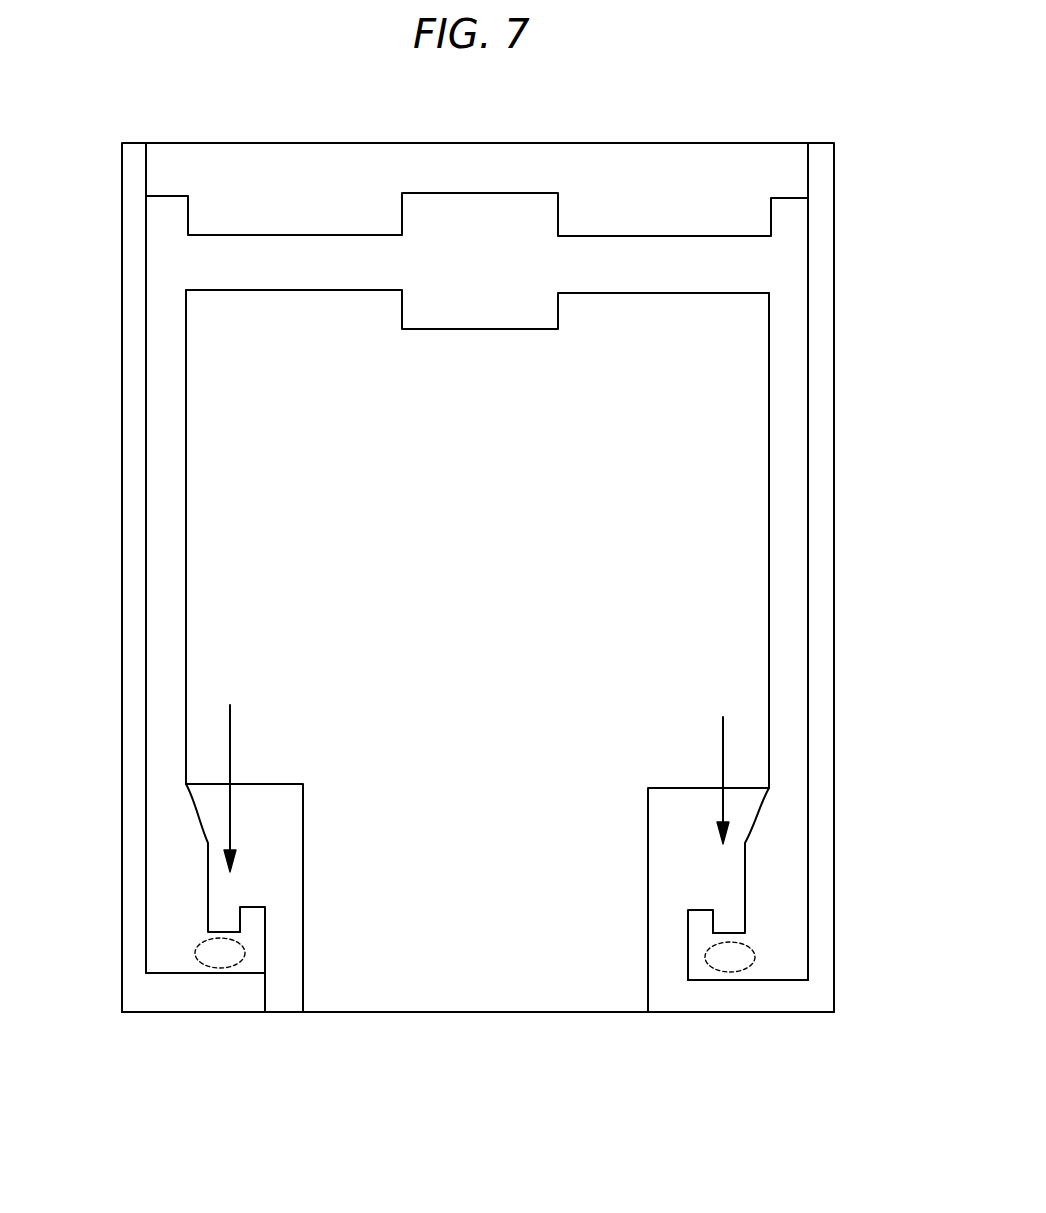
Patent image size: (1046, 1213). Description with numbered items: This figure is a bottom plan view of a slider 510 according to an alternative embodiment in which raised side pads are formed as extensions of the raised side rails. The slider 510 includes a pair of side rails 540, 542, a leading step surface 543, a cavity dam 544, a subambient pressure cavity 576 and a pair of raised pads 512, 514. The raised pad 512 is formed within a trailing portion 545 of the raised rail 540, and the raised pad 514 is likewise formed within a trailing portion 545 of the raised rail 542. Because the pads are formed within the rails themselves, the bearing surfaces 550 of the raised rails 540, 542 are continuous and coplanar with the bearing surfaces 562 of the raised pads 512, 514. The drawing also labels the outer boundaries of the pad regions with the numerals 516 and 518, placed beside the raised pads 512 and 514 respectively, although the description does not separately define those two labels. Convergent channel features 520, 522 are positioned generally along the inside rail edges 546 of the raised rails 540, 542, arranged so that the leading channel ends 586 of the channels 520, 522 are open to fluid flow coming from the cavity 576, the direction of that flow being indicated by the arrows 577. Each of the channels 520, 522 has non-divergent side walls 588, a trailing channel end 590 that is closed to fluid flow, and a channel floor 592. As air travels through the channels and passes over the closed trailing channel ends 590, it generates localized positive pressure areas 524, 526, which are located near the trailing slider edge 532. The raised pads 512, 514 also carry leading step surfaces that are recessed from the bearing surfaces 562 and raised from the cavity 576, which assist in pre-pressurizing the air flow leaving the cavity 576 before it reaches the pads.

The slider 510 is at (718, 72).
The raised pad 512 is at (297, 752).
The raised pad 514 is at (683, 760).
The first nozzle wall 516 is at (292, 820).
The second nozzle wall 518 is at (690, 808).
The convergent channel feature 520 is at (240, 888).
The convergent channel feature 522 is at (719, 903).
The localized positive pressure area 524 is at (195, 953).
The localized positive pressure area 526 is at (760, 955).
The trailing slider edge 532 is at (370, 1012).
The side rail 540 is at (175, 588).
The side rail 542 is at (790, 532).
The leading step surface 543 is at (352, 165).
The cavity dam 544 is at (647, 236).
The trailing portion 545 is at (146, 850).
The inside rail edge 546 is at (186, 608).
The bearing surface 550 is at (160, 690).
The bearing surface 562 is at (183, 890).
The subambient pressure cavity 576 is at (447, 509).
The arrows 577 is at (230, 748).
The leading channel end 586 is at (227, 907).
The non-divergent side wall 588 is at (212, 915).
The trailing channel end 590 is at (233, 932).
The channel floor 592 is at (223, 920).